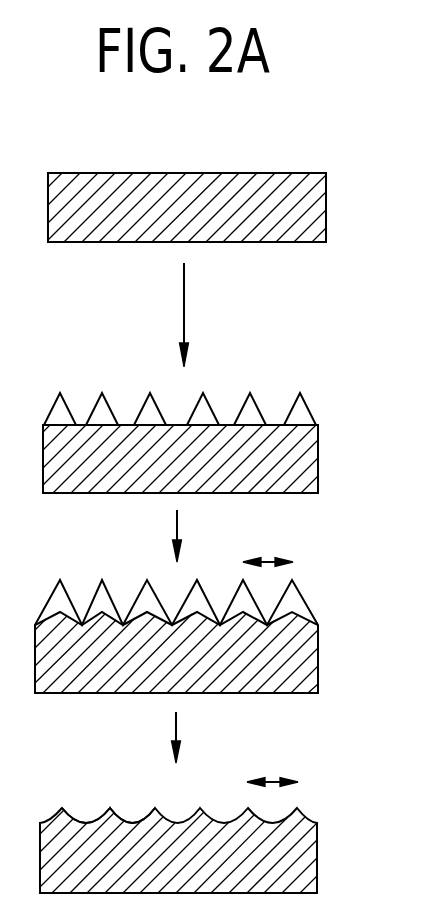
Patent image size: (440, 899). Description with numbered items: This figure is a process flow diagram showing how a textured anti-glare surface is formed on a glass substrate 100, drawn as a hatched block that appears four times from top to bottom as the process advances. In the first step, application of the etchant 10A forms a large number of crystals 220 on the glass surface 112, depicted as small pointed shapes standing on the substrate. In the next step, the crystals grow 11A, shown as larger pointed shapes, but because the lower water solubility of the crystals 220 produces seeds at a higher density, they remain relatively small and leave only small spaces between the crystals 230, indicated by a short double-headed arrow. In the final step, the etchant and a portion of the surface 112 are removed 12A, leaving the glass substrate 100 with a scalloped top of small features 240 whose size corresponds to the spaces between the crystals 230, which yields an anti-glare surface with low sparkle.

The glass substrate 100 is at (205, 228).
The application of the etchant 10A is at (160, 315).
The growth of the crystals 11A is at (153, 536).
The removal of the etchant and a portion of the surface 12A is at (154, 737).
The crystals 220 is at (151, 393).
The glass surface 112 is at (229, 422).
The spaces between the crystals 230 is at (267, 560).
The features 240 is at (155, 808).